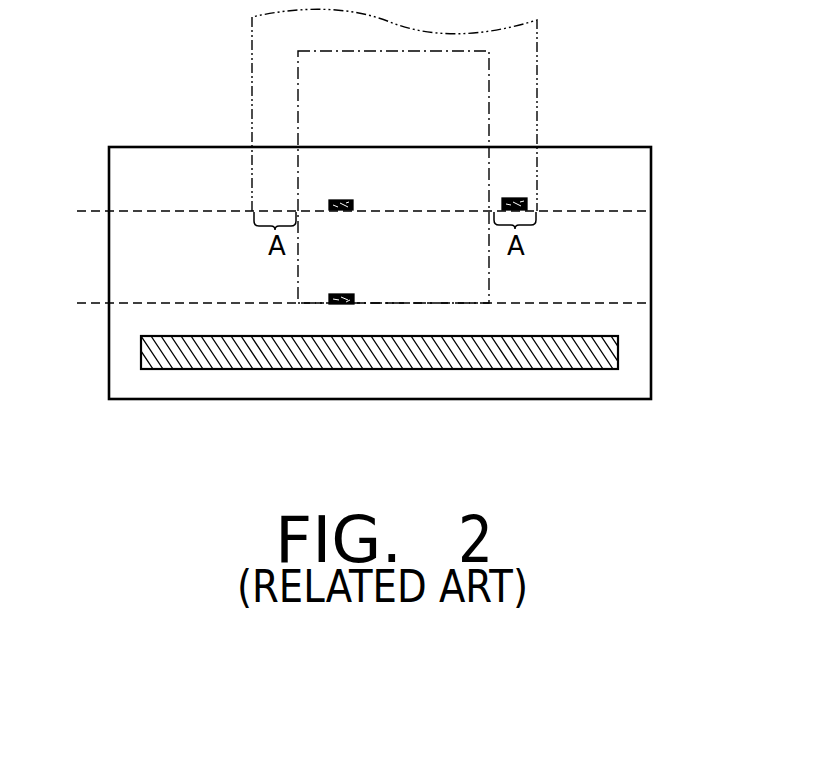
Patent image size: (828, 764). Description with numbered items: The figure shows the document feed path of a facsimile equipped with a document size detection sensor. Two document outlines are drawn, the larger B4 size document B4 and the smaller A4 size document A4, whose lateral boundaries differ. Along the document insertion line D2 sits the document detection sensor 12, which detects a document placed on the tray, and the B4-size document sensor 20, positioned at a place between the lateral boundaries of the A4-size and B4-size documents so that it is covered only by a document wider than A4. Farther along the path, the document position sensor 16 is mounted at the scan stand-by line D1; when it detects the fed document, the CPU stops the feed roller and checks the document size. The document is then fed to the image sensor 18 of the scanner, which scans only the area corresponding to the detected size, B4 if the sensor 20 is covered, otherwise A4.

The document detection sensor 12 is at (341, 200).
The document position sensor 16 is at (345, 294).
The image sensor 18 is at (618, 347).
The B4-size document sensor 20 is at (528, 200).
The B4-size document B4 is at (262, 51).
The A4-size document A4 is at (310, 116).
The scan stand-by line D1 is at (342, 305).
The document insertion line D2 is at (342, 212).